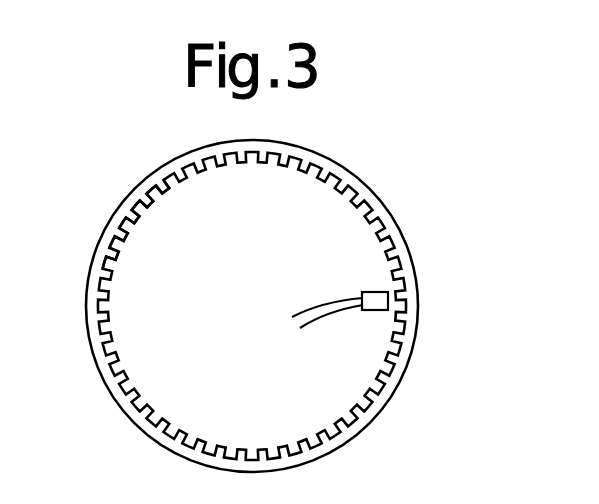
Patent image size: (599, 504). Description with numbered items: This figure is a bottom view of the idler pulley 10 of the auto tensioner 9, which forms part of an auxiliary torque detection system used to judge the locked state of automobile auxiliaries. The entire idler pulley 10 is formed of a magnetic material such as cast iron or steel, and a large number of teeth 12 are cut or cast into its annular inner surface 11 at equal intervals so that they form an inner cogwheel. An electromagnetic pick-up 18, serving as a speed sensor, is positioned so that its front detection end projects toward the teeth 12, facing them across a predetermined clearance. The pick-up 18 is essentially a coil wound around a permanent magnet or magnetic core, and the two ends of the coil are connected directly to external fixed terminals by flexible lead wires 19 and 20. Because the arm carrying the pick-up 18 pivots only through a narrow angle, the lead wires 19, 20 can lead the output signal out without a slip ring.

The auto tensioner 9 is at (119, 189).
The idler pulley 10 is at (393, 224).
The annular inner surface 11 is at (198, 441).
The teeth 12 is at (178, 178).
The electromagnetic pick-up 18 is at (366, 294).
The flexible lead wire 19 is at (320, 300).
The flexible lead wire 20 is at (335, 311).